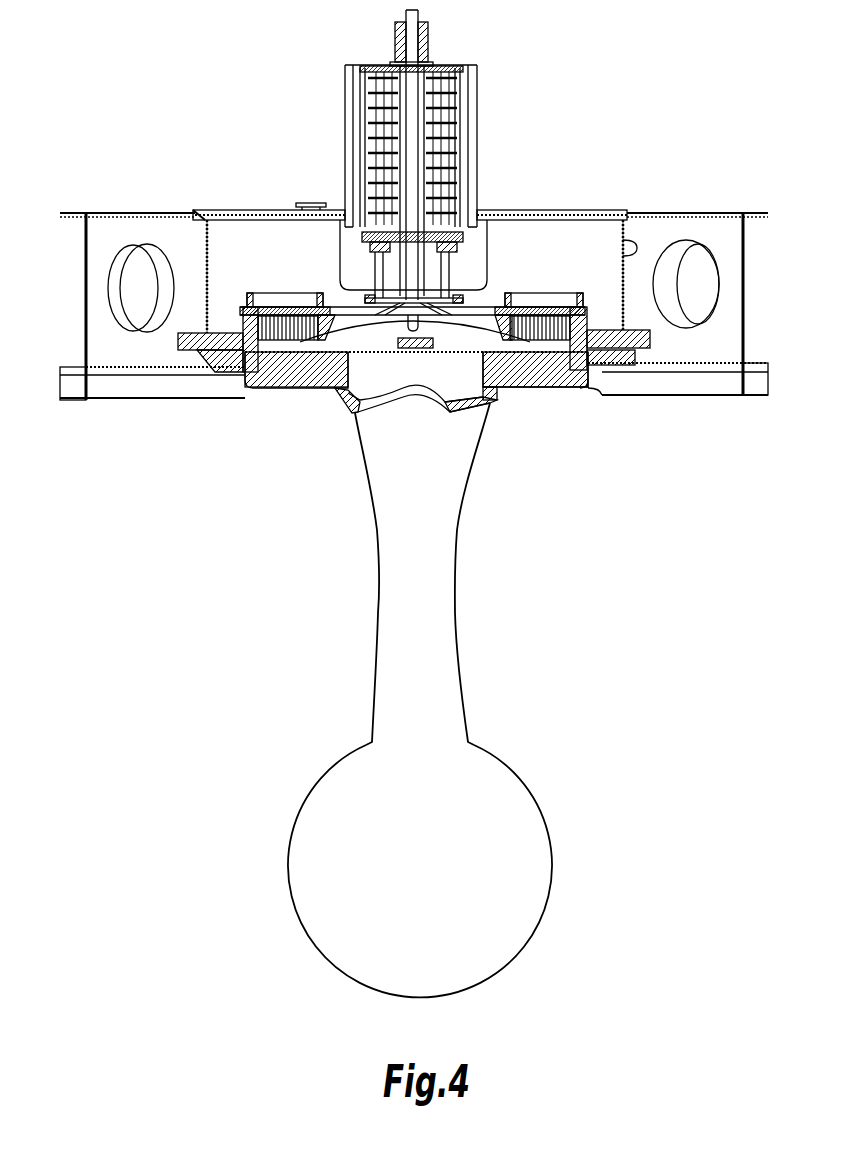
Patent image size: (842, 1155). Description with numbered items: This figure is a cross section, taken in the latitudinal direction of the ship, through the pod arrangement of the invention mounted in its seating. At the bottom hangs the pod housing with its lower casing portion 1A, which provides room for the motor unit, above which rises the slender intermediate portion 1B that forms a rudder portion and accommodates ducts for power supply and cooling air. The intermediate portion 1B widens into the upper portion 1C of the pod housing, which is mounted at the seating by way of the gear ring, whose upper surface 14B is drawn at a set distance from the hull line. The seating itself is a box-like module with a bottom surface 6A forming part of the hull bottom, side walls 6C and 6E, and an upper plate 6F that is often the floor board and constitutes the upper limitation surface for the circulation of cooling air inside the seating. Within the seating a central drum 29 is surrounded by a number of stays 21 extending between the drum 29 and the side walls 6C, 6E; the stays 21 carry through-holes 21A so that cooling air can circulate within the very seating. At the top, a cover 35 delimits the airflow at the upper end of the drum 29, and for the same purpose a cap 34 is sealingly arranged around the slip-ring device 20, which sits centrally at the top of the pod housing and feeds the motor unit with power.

The lower casing portion 1A is at (555, 862).
The intermediate portion 1B is at (458, 595).
The upper portion of the pod housing 1C is at (288, 378).
The bottom surface 6A is at (143, 392).
The side wall 6C is at (748, 300).
The side wall 6E is at (85, 303).
The plate 6F is at (680, 210).
The upper surface of the gear ring 14B is at (287, 318).
The slip-ring device 20 is at (378, 130).
The stays 21 is at (110, 352).
The through-holes 21A is at (135, 285).
The drum 29 is at (620, 258).
The cap 34 is at (482, 100).
The cover 35 is at (568, 208).